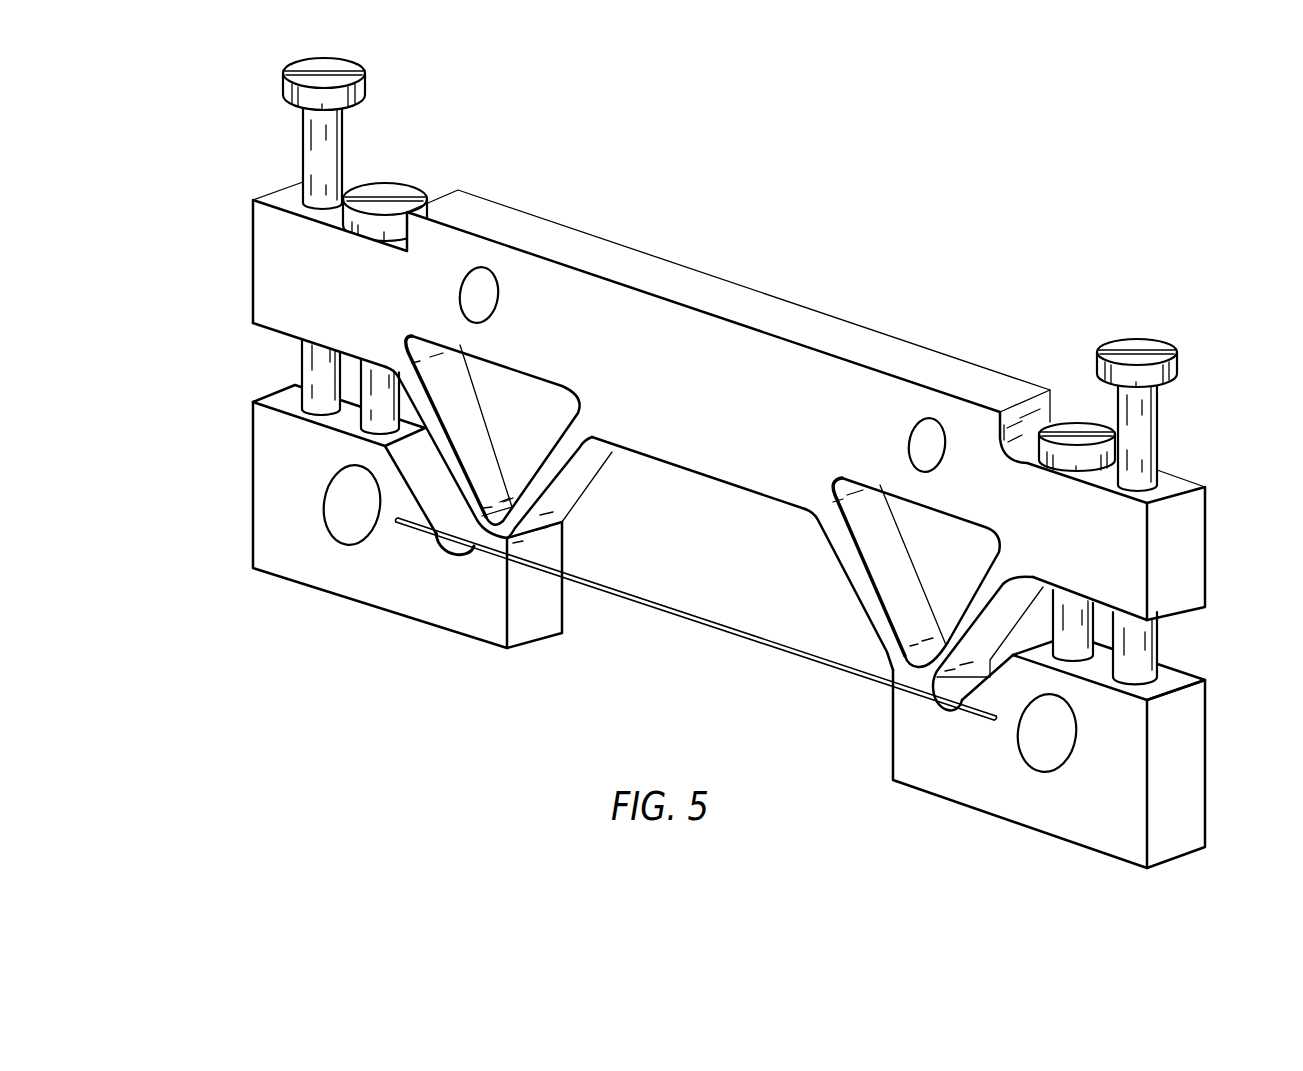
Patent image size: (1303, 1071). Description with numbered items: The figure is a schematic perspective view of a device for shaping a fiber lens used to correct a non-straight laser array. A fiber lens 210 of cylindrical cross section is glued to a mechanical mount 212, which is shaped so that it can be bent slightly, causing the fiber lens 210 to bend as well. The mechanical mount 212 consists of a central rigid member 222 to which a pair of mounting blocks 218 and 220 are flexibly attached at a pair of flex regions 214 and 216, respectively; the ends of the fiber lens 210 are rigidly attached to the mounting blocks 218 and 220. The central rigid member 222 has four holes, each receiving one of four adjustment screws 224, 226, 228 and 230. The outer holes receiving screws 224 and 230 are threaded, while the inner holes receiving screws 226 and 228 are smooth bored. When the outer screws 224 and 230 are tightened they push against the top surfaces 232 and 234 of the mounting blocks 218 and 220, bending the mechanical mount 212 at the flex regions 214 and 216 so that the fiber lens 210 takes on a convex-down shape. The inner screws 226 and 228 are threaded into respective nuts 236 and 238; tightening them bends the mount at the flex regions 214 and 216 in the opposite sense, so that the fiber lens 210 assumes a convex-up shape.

The fiber lens 210 is at (707, 627).
The mechanical mount 212 is at (742, 340).
The flex region 214 is at (550, 529).
The flex region 216 is at (887, 660).
The mounting block 218 is at (266, 516).
The mounting block 220 is at (898, 742).
The central rigid member 222 is at (862, 345).
The adjustment screw 224 is at (347, 130).
The adjustment screw 226 is at (402, 195).
The adjustment screw 228 is at (1080, 420).
The adjustment screw 230 is at (1158, 403).
The top surface 232 is at (282, 398).
The top surface 234 is at (1170, 672).
The nut 236 is at (350, 525).
The nut 238 is at (1043, 747).